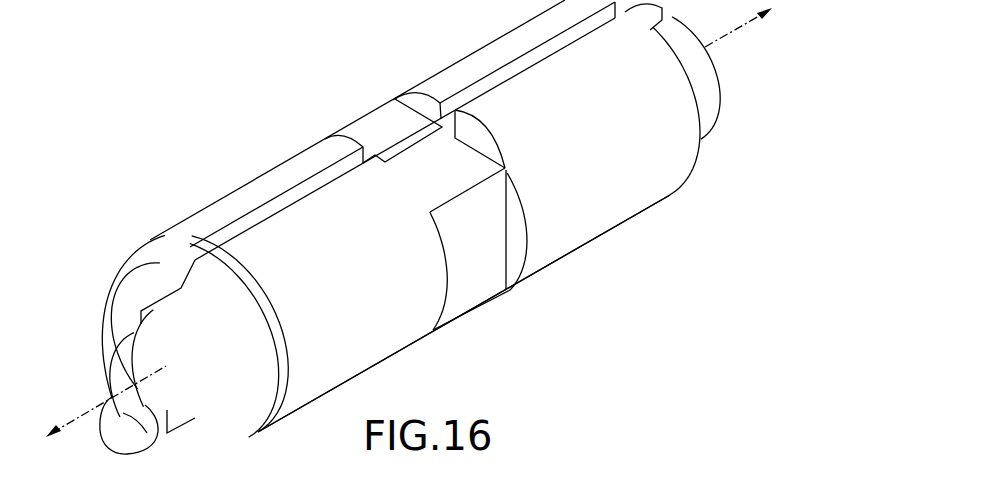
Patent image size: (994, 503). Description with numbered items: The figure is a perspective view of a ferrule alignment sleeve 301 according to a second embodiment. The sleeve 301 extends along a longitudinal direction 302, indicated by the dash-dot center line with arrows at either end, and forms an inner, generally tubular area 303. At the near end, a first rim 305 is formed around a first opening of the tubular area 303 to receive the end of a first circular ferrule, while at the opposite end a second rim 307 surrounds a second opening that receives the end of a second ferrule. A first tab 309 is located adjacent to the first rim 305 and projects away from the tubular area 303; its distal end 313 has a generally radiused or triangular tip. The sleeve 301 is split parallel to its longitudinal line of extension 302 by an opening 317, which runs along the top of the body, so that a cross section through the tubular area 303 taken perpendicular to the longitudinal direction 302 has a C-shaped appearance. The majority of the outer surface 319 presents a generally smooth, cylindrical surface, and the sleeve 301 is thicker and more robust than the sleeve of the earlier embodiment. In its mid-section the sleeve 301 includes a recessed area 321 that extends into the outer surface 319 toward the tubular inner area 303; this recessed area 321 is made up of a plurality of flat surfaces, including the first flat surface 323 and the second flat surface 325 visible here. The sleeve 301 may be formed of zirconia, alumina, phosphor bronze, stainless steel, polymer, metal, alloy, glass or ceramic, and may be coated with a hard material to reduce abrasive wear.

The ferrule alignment sleeve 301 is at (257, 154).
The longitudinal direction 302 is at (747, 27).
The inner tubular area 303 is at (140, 340).
The first rim 305 is at (193, 413).
The second rim 307 is at (721, 107).
The first tab 309 is at (128, 404).
The distal end of first tab 313 is at (113, 433).
The opening 317 is at (233, 232).
The outer surface 319 is at (377, 297).
The recessed area 321 is at (482, 316).
The first flat surface 323 is at (492, 254).
The second flat surface 325 is at (405, 140).